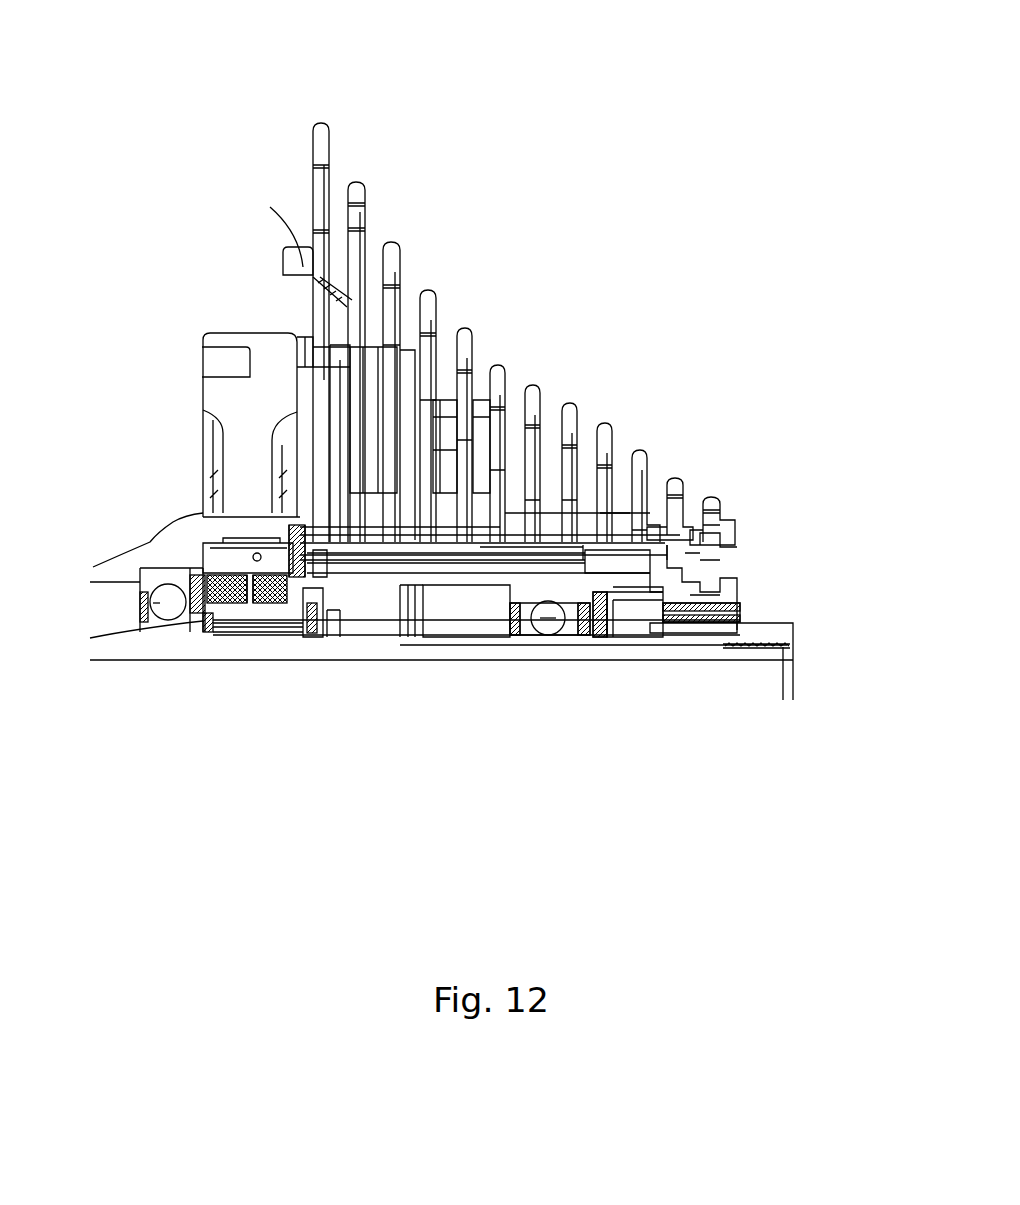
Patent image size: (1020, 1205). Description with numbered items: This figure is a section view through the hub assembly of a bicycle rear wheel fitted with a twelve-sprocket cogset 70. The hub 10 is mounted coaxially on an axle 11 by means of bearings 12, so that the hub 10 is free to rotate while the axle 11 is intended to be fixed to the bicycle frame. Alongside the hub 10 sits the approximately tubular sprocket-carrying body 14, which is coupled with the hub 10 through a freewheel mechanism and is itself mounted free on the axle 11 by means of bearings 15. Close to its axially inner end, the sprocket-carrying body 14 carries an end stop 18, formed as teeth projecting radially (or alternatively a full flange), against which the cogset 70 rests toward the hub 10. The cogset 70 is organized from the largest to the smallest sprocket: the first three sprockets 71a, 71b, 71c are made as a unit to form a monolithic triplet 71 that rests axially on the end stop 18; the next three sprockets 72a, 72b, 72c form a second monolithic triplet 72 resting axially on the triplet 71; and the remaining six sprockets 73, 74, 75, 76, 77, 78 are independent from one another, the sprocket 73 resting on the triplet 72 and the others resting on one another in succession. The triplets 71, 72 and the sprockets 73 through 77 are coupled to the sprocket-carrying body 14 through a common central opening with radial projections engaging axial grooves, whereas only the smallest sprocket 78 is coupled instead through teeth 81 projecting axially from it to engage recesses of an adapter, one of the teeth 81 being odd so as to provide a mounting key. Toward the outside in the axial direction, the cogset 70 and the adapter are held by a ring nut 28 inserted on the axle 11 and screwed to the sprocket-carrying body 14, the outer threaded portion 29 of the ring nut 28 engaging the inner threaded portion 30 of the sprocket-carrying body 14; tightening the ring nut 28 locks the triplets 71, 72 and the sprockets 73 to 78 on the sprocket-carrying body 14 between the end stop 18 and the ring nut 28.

The hub 10 is at (140, 555).
The axle 11 is at (768, 655).
The bearings 12 is at (142, 613).
The sprocket-carrying body 14 is at (480, 580).
The bearings 15 is at (320, 612).
The end stop 18 is at (255, 590).
The ring nut 28 is at (718, 592).
The outer threaded portion 29 is at (640, 585).
The inner threaded portion 30 is at (615, 595).
The cogset 70 is at (464, 280).
The monolithic group (triplet) 71 is at (270, 300).
The sprocket 71a is at (313, 132).
The sprocket 71b is at (348, 190).
The sprocket 71c is at (316, 265).
The monolithic group (triplet) 72 is at (332, 357).
The sprocket 72a is at (420, 298).
The sprocket 72b is at (457, 335).
The sprocket 72c is at (490, 372).
The sprocket 73 is at (537, 400).
The sprocket 74 is at (578, 416).
The sprocket 75 is at (606, 425).
The sprocket 76 is at (648, 470).
The sprocket 77 is at (680, 481).
The sprocket 78 is at (708, 506).
The teeth 81 is at (686, 554).